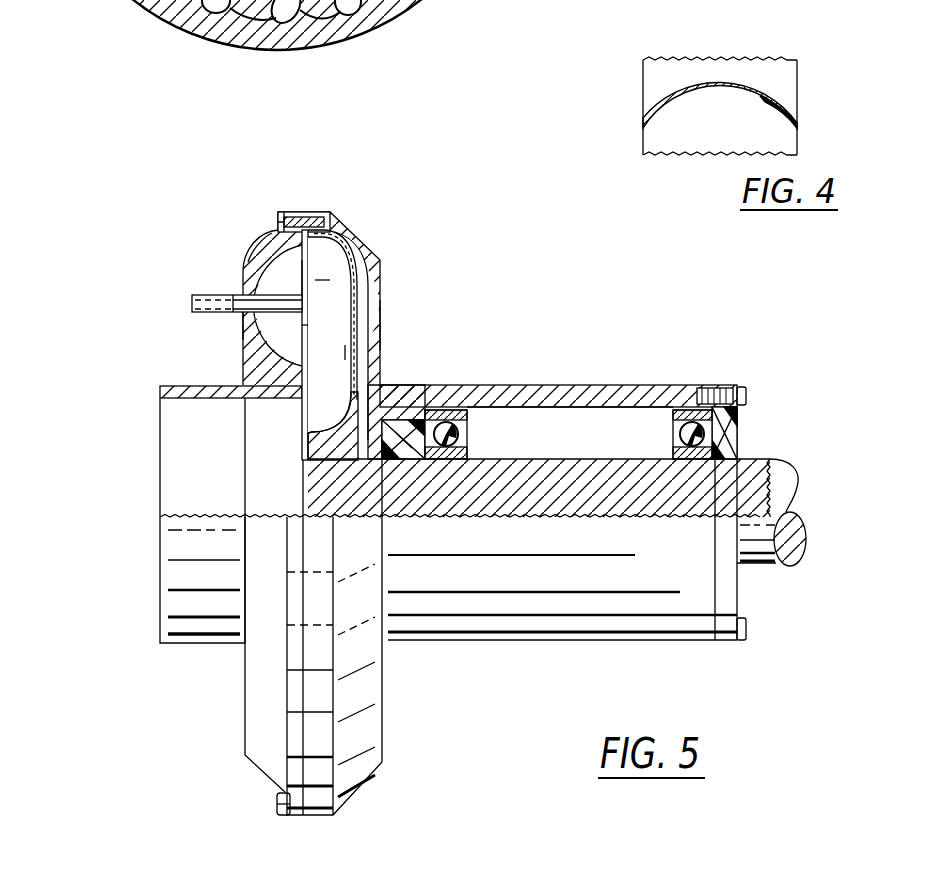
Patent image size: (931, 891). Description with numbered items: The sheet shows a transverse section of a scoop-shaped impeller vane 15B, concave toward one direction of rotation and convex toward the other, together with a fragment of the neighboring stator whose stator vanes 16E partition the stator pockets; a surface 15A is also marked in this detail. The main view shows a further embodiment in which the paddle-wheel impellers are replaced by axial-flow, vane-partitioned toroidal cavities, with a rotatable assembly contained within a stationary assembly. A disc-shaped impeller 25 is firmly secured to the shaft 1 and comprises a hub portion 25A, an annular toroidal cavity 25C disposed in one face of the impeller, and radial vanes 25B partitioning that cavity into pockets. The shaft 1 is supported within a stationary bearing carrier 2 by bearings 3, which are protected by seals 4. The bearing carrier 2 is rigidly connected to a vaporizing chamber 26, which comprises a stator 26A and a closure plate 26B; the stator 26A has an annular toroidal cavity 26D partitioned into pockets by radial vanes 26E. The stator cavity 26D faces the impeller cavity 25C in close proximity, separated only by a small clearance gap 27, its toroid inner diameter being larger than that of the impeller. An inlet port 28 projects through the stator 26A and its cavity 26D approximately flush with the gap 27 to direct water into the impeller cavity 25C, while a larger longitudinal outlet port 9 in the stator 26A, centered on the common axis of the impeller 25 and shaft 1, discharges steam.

In FIG. 5, the shaft 1 is at (797, 478).
In FIG. 5, the bearing carrier 2 is at (635, 385).
In FIG. 5, the bearings 3 is at (446, 410).
In FIG. 5, the seals 4 is at (408, 425).
In FIG. 5, the outlet port 9 is at (160, 425).
In FIG. 4, the groove wall 15A is at (797, 62).
In FIG. 4, the impeller vane 15B is at (777, 100).
In FIG. 4, the stator vane 16E is at (282, 27).
In FIG. 5, the impeller 25 is at (348, 255).
In FIG. 5, the hub portion 25A is at (307, 445).
In FIG. 5, the radial vanes 25B is at (307, 331).
In FIG. 5, the annular toroidal cavity 25C is at (346, 352).
In FIG. 5, the vaporizing chamber 26 is at (298, 210).
In FIG. 5, the stator 26A is at (246, 272).
In FIG. 5, the closure plate 26B is at (381, 328).
In FIG. 5, the annular toroidal cavity 26D is at (262, 250).
In FIG. 5, the radial vanes 26E is at (302, 278).
In FIG. 5, the clearance gap 27 is at (315, 283).
In FIG. 5, the inlet port 28 is at (192, 304).